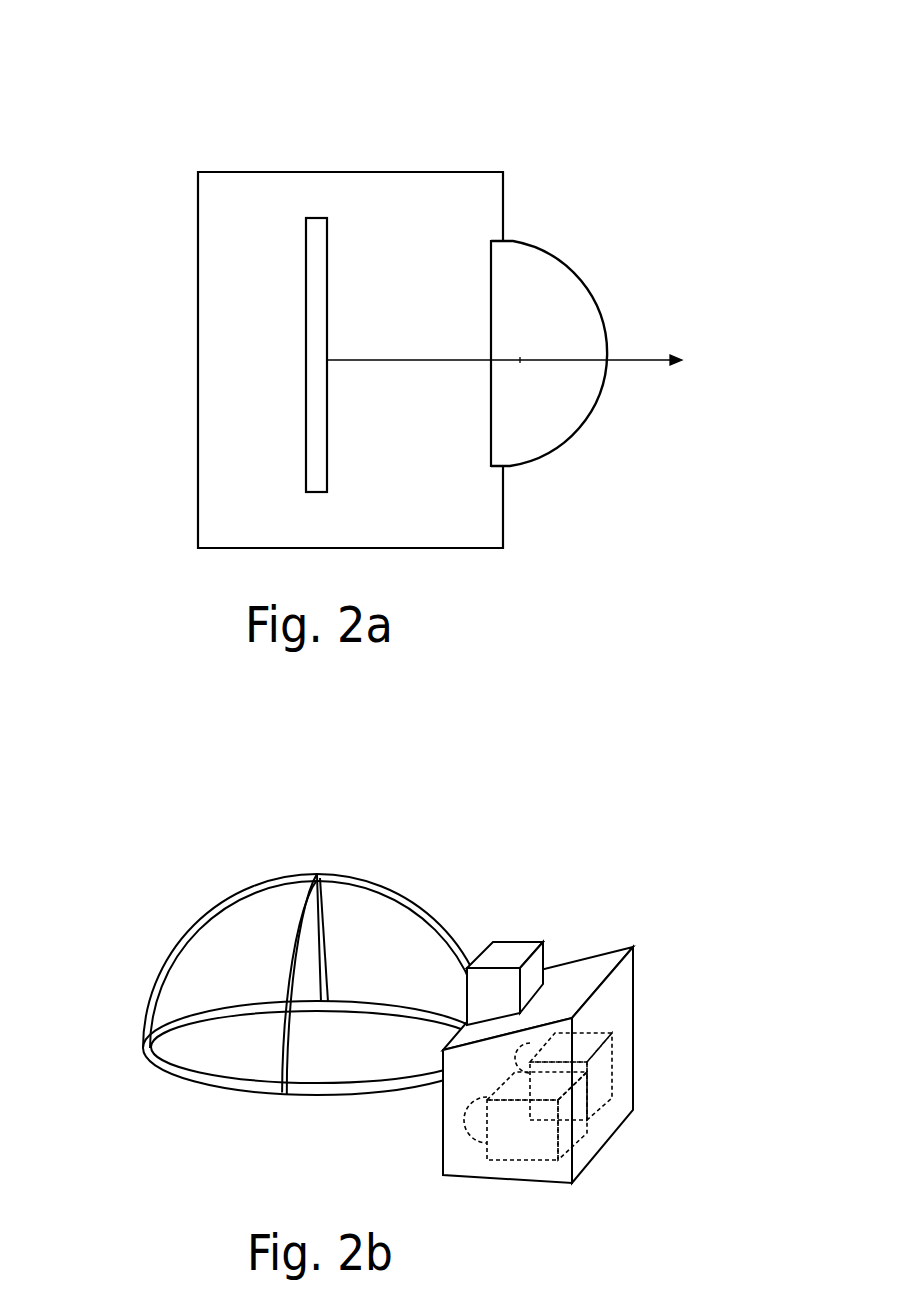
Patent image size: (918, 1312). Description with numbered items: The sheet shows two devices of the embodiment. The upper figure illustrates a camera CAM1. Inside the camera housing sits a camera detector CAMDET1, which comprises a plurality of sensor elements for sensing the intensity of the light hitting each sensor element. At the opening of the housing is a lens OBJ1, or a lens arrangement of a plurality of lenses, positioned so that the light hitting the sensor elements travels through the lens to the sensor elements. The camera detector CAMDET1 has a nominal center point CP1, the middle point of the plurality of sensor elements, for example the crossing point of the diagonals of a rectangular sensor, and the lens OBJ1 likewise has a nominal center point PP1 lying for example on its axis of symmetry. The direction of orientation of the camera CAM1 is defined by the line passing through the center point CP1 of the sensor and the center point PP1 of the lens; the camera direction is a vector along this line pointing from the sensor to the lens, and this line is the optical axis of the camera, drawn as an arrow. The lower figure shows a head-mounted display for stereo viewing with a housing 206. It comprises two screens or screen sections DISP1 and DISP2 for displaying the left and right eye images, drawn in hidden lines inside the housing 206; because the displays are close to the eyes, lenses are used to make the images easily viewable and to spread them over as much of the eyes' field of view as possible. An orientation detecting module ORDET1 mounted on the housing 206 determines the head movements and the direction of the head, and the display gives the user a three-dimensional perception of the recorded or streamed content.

In FIG. 2A, the camera CAM1 is at (277, 65).
In FIG. 2A, the camera detector CAMDET1 is at (315, 217).
In FIG. 2A, the nominal center point of the camera detector CP1 is at (328, 360).
In FIG. 2A, the nominal center point of the lens PP1 is at (523, 360).
In FIG. 2A, the lens OBJ1 is at (513, 467).
In FIG. 2B, the orientation detecting module ORDET1 is at (525, 942).
In FIG. 2B, the housing of head mounted display 206 is at (632, 913).
In FIG. 2B, the first screen DISP1 is at (606, 1042).
In FIG. 2B, the second screen DISP2 is at (540, 1162).